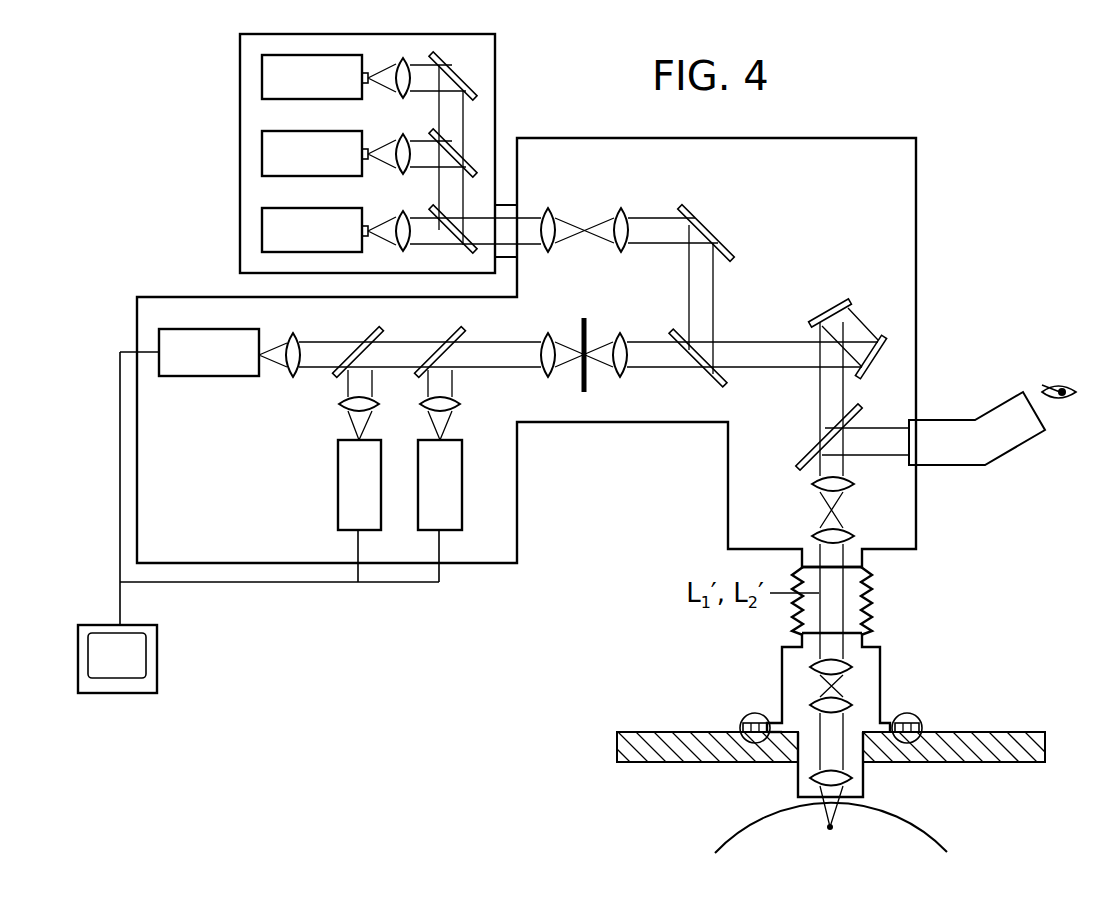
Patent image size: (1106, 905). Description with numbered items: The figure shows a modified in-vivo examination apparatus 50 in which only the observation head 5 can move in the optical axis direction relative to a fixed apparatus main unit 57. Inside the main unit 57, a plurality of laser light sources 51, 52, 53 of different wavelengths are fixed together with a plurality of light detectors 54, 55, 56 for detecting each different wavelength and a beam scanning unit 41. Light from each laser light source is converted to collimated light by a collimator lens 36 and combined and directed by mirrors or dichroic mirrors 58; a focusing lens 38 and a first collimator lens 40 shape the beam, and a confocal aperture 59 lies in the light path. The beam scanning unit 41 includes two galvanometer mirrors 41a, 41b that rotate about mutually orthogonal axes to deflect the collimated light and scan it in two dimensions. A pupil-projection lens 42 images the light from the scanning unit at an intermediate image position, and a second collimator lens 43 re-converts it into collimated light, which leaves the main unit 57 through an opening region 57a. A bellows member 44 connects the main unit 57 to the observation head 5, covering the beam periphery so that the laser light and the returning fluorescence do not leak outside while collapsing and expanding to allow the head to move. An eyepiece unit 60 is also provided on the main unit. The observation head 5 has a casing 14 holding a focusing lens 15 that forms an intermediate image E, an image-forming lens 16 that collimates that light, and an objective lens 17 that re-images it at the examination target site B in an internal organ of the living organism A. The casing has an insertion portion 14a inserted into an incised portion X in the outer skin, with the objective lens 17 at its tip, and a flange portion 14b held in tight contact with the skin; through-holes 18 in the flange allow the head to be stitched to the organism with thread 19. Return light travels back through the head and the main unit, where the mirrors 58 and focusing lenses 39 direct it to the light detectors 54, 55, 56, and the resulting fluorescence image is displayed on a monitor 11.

The observation head 5 is at (888, 639).
The monitor 11 is at (157, 657).
The casing 14 is at (782, 660).
The insertion portion 14a is at (795, 796).
The flange portion 14b is at (760, 712).
The focusing lens 15 is at (852, 667).
The image-forming lens 16 is at (852, 705).
The objective lens 17 is at (852, 785).
The through-holes 18 is at (752, 722).
The thread 19 is at (738, 722).
The collimator lens 36 is at (398, 63).
The focusing lens 38 is at (548, 206).
The focusing lens 39 is at (287, 374).
The first collimator lens 40 is at (622, 206).
The beam scanning unit 41 is at (895, 303).
The galvanometer mirror 41a is at (884, 357).
The galvanometer mirror 41b is at (823, 301).
The pupil-projection lens 42 is at (806, 461).
The second collimator lens 43 is at (854, 536).
The bellows member 44 is at (872, 600).
The in-vivo examination apparatus 50 is at (918, 108).
The laser light source 51 is at (262, 79).
The laser light source 52 is at (262, 155).
The laser light source 53 is at (262, 229).
The light detector 54 is at (200, 378).
The light detector 55 is at (338, 495).
The light detector 56 is at (462, 498).
The apparatus main unit 57 is at (916, 248).
The mount portion of housing 57a is at (858, 576).
The mirror or dichroic mirror 58 is at (458, 68).
The confocal aperture 59 is at (586, 395).
The eyepiece unit 60 is at (1003, 460).
The living organism A is at (1010, 733).
The examination target site B is at (920, 840).
The intermediate image E is at (812, 678).
The incised portion X is at (800, 745).